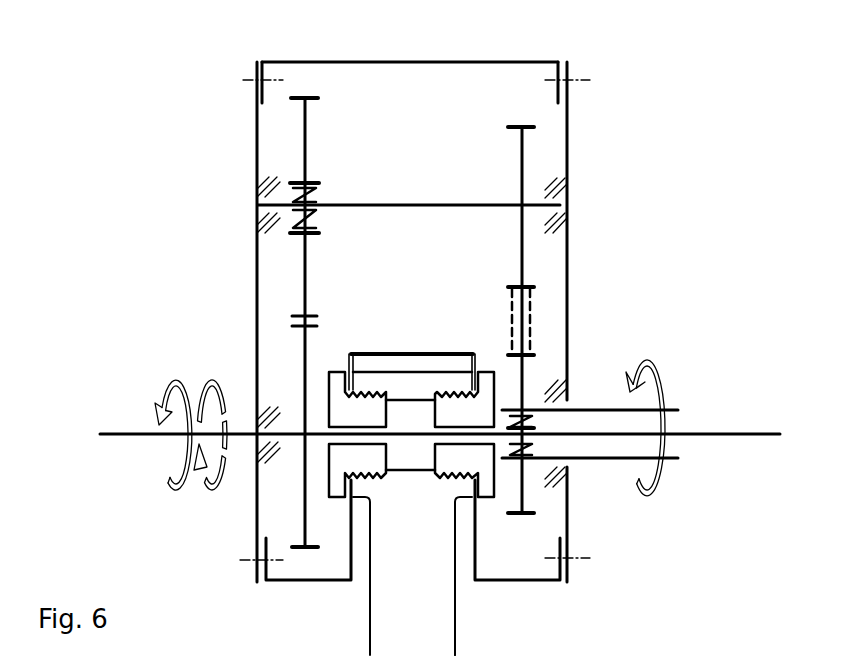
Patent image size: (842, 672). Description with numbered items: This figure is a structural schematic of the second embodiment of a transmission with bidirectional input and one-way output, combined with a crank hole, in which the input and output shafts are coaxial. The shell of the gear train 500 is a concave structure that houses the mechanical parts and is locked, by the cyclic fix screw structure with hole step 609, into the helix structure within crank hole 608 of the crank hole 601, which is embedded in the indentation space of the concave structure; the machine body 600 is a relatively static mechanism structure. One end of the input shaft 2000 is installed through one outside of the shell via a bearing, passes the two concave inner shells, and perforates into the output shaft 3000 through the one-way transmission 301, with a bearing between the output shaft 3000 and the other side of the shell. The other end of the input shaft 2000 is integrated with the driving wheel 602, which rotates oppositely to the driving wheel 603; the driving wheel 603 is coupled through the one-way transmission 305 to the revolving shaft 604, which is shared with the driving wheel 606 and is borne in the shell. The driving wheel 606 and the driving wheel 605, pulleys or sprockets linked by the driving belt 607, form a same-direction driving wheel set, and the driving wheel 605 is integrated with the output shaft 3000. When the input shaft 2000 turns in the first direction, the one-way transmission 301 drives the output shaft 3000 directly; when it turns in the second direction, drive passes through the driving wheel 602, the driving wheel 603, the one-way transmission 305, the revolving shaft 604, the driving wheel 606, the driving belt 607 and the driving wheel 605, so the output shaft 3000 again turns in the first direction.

The shell of gear train 500 is at (465, 61).
The machine body 600 is at (442, 625).
The crank hole 601 is at (403, 467).
The driving wheel 602 is at (307, 347).
The driving wheel 603 is at (307, 125).
The revolving shaft 604 is at (382, 204).
The driving wheel 605 is at (512, 515).
The driving wheel 606 is at (518, 172).
The driving belt 607 is at (508, 305).
The helix structure within crank hole 608 is at (350, 392).
The cyclic fix screw structure with hole step 609 is at (435, 410).
The one-way transmission 305 is at (320, 188).
The one-way transmission 301 is at (527, 416).
The input shaft 2000 is at (120, 430).
The output shaft 3000 is at (593, 458).